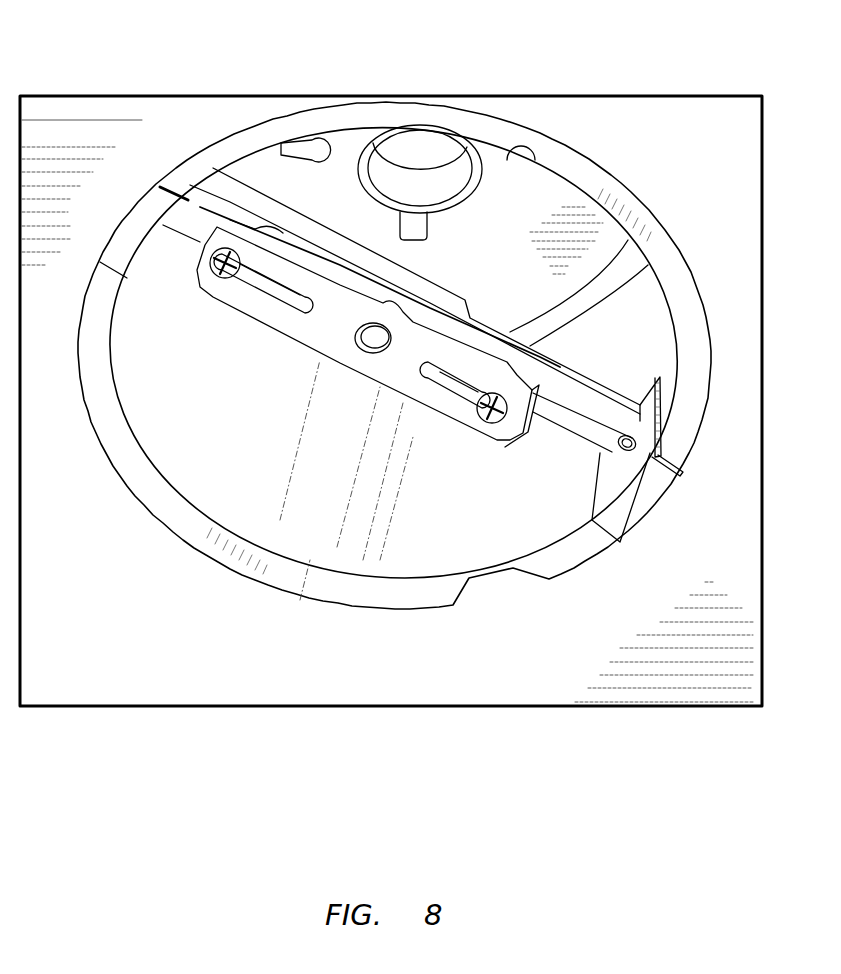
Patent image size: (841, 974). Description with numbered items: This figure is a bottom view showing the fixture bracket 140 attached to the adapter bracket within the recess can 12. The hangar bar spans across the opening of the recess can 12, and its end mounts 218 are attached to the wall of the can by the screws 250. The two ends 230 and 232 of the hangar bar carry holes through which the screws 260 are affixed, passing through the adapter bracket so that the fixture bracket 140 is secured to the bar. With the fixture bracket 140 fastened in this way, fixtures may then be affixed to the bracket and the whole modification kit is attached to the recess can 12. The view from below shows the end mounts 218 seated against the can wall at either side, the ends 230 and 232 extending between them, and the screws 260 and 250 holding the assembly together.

The recess can 12 is at (552, 207).
The end mount 218 is at (147, 223).
The end 232 is at (218, 200).
The end 230 is at (580, 383).
The fixture bracket 140 is at (463, 363).
The screw 260 is at (214, 292).
The screw 250 is at (633, 453).